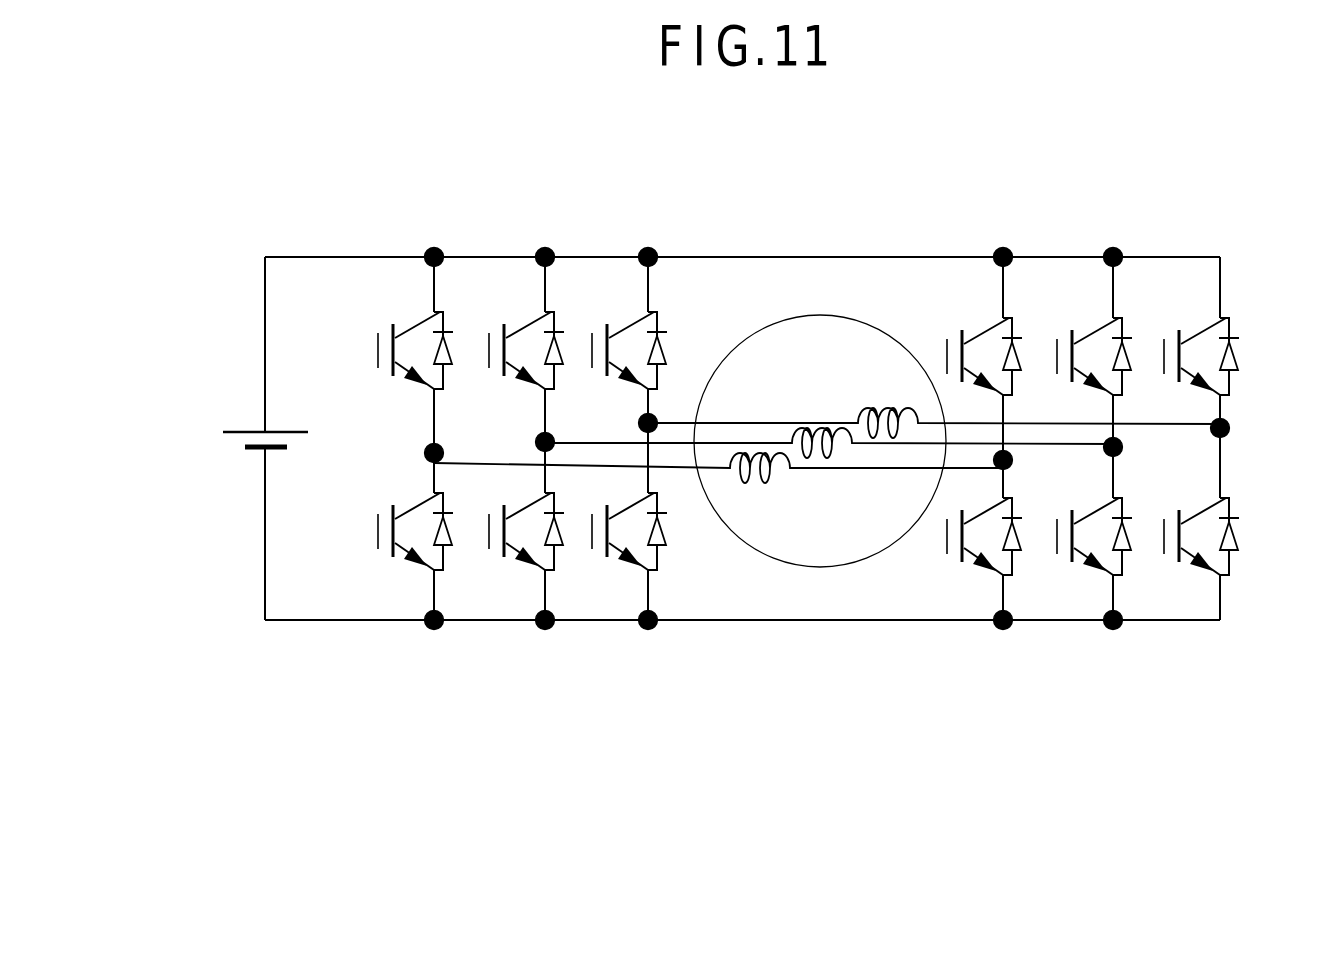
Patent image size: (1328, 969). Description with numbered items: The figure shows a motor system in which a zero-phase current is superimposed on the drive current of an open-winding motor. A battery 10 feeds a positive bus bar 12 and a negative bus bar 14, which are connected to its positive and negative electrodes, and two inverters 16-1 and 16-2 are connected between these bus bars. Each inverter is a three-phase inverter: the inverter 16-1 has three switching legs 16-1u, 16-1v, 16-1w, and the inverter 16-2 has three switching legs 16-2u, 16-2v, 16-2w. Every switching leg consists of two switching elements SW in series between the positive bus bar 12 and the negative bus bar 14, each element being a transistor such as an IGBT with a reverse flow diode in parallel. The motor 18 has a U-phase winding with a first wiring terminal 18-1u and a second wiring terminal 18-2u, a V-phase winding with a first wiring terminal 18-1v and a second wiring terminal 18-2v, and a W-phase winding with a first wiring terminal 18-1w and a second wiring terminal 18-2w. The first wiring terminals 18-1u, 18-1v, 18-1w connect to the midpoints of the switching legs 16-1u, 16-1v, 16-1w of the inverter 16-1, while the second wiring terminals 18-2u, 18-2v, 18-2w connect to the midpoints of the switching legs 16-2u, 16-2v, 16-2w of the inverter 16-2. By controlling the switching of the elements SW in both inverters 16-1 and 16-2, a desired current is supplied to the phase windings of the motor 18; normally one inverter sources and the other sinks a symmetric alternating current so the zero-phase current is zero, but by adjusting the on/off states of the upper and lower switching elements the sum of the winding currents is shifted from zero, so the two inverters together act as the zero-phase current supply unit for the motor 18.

The battery 10 is at (213, 440).
The positive bus bar 12 is at (293, 256).
The negative bus bar 14 is at (317, 622).
The inverter 16-1 is at (578, 465).
The switching leg 16-1u is at (450, 283).
The switching leg 16-1v is at (568, 285).
The switching leg 16-1w is at (690, 283).
The inverter 16-2 is at (1125, 467).
The switching leg 16-2u is at (1020, 283).
The switching leg 16-2v is at (1130, 287).
The switching leg 16-2w is at (1230, 287).
The motor 18 is at (827, 408).
The first wiring terminal 18-1u is at (670, 464).
The first wiring terminal 18-1v is at (705, 444).
The first wiring terminal 18-1w is at (690, 412).
The second wiring terminal 18-2u is at (933, 468).
The second wiring terminal 18-2v is at (903, 444).
The second wiring terminal 18-2w is at (948, 418).